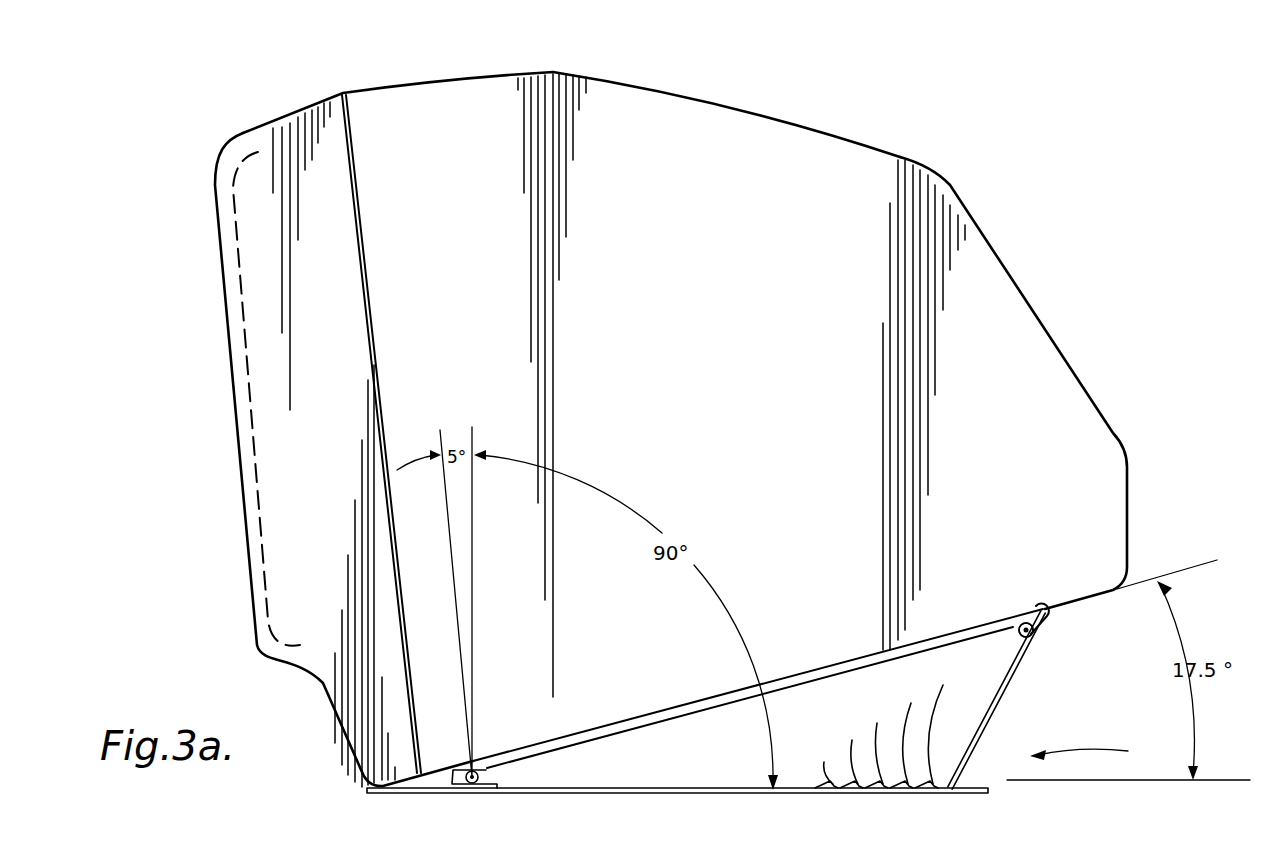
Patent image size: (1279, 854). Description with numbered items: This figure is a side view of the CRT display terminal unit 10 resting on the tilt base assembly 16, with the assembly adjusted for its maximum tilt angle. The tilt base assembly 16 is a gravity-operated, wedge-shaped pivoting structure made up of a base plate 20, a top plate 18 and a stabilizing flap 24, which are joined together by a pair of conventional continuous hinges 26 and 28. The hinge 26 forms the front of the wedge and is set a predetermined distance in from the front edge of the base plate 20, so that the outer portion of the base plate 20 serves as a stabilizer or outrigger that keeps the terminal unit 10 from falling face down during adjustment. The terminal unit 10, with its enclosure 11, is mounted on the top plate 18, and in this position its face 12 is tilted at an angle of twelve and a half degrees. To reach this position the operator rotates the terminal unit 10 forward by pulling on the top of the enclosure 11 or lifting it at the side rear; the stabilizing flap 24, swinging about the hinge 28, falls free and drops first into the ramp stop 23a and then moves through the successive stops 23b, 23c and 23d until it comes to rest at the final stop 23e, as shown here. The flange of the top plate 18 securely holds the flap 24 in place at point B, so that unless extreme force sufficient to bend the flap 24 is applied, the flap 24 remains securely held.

The CRT display terminal unit 10 is at (988, 228).
The enclosure 11 is at (770, 113).
The face 12 is at (232, 217).
The tilt base assembly 16 is at (1091, 750).
The top plate 18 is at (809, 680).
The base plate 20 is at (367, 790).
The first ramp stop 23a is at (819, 765).
The ramp stop 23b is at (855, 754).
The ramp stop 23c is at (883, 744).
The ramp stop 23d is at (908, 734).
The ramp stop 23e is at (940, 724).
The stabilizing flap 24 is at (997, 713).
The continuous hinge 26 is at (473, 790).
The continuous hinge 28 is at (1036, 630).
The point B is at (1036, 635).